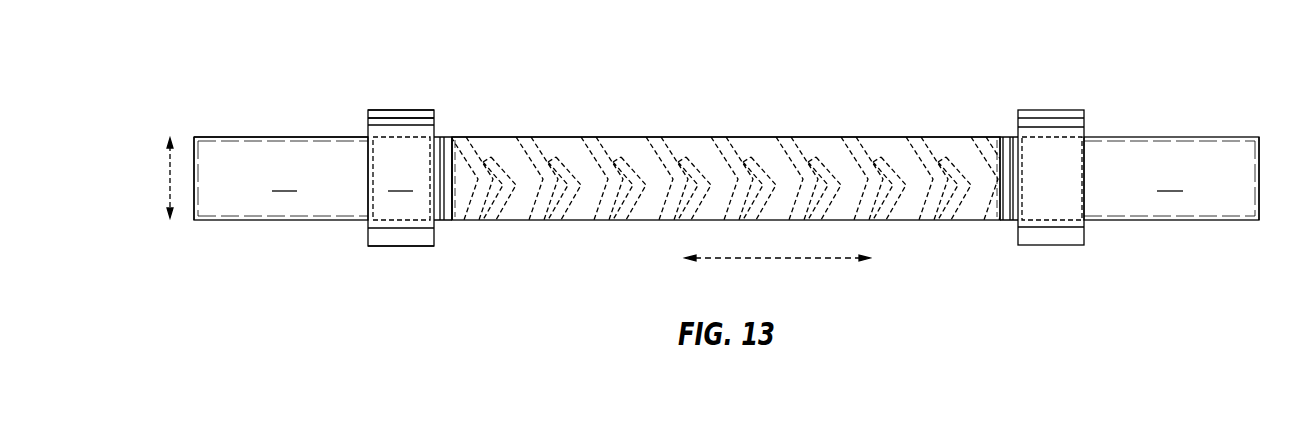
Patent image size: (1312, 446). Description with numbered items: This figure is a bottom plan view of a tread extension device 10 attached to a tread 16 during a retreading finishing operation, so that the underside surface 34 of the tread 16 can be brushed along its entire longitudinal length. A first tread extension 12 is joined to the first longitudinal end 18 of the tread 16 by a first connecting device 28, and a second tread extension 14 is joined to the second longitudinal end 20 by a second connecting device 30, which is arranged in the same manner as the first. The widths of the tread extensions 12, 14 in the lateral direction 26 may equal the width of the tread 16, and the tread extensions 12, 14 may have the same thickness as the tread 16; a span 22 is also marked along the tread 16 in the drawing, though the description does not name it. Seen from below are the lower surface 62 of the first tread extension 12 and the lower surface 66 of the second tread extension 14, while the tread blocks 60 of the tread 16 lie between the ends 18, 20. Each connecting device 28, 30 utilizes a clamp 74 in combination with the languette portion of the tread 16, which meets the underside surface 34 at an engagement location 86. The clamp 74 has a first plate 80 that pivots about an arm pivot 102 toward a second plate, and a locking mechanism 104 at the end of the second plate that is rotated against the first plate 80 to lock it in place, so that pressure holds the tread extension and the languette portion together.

The tread extension device 10 is at (1213, 50).
The first tread extension 12 is at (281, 178).
The second tread extension 14 is at (1171, 178).
The tread 16 is at (715, 180).
The first longitudinal end 18 is at (467, 192).
The second longitudinal end 20 is at (983, 198).
The length of flexible section 22 is at (753, 258).
The lateral direction 26 is at (170, 178).
The first connecting device 28 is at (287, 137).
The second connecting device 30 is at (1135, 136).
The underside surface 34 is at (548, 150).
The tread blocks 60 is at (532, 198).
The lower surface 62 is at (218, 136).
The lower surface 66 is at (1215, 157).
The clamp 74 is at (402, 110).
The first plate 80 is at (401, 178).
The engagement location 86 is at (452, 152).
The arm pivot 102 is at (368, 112).
The locking mechanism 104 is at (402, 247).